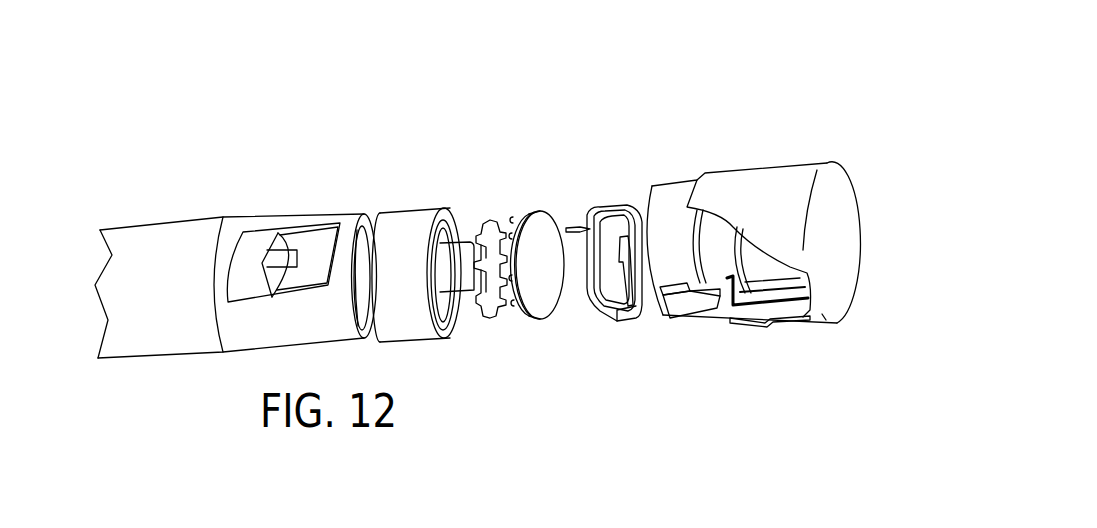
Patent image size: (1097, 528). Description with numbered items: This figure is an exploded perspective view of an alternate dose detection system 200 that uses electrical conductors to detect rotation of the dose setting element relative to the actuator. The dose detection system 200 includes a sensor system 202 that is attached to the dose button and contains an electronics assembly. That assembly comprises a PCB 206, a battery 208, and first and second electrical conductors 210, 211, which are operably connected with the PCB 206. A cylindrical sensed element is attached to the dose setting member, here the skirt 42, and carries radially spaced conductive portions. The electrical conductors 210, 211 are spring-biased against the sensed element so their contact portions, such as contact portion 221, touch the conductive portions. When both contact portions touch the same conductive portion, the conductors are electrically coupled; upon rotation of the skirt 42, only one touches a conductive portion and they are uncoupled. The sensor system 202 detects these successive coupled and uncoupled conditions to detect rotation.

The dose detection system 200 is at (717, 212).
The sensor system 202 is at (753, 274).
The PCB 206 is at (613, 268).
The battery 208 is at (620, 227).
The first electrical conductor 210 is at (787, 293).
The second electrical conductor 211 is at (742, 313).
The contact portion 221 is at (713, 283).
The skirt 42 is at (505, 333).